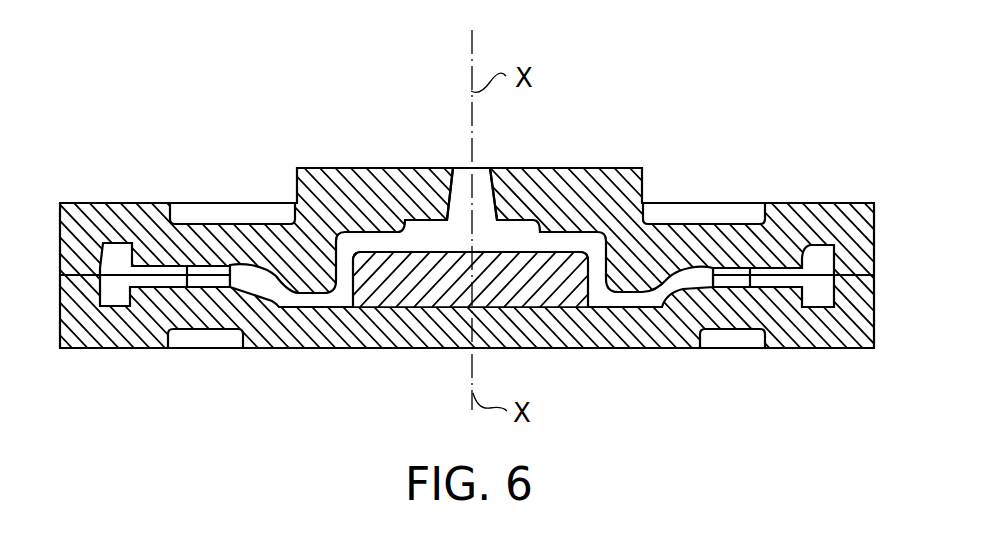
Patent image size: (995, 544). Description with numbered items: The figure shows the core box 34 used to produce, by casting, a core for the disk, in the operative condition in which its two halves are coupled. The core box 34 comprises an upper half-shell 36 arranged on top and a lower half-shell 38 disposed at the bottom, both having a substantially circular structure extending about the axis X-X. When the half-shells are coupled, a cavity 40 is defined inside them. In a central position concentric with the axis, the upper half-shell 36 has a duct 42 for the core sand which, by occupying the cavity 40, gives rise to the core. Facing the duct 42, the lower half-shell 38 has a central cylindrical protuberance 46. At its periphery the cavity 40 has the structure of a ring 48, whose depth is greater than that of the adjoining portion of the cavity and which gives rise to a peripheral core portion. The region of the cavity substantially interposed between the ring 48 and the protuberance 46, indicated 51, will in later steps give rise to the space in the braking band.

The core box 34 is at (497, 232).
The half-shell 36 is at (787, 213).
The half-shell 38 is at (785, 330).
The cavity 40 is at (397, 240).
The duct 42 is at (478, 188).
The cylindrical protuberance 46 is at (553, 298).
The ring 48 is at (117, 293).
The region of the cavity 51 is at (205, 258).